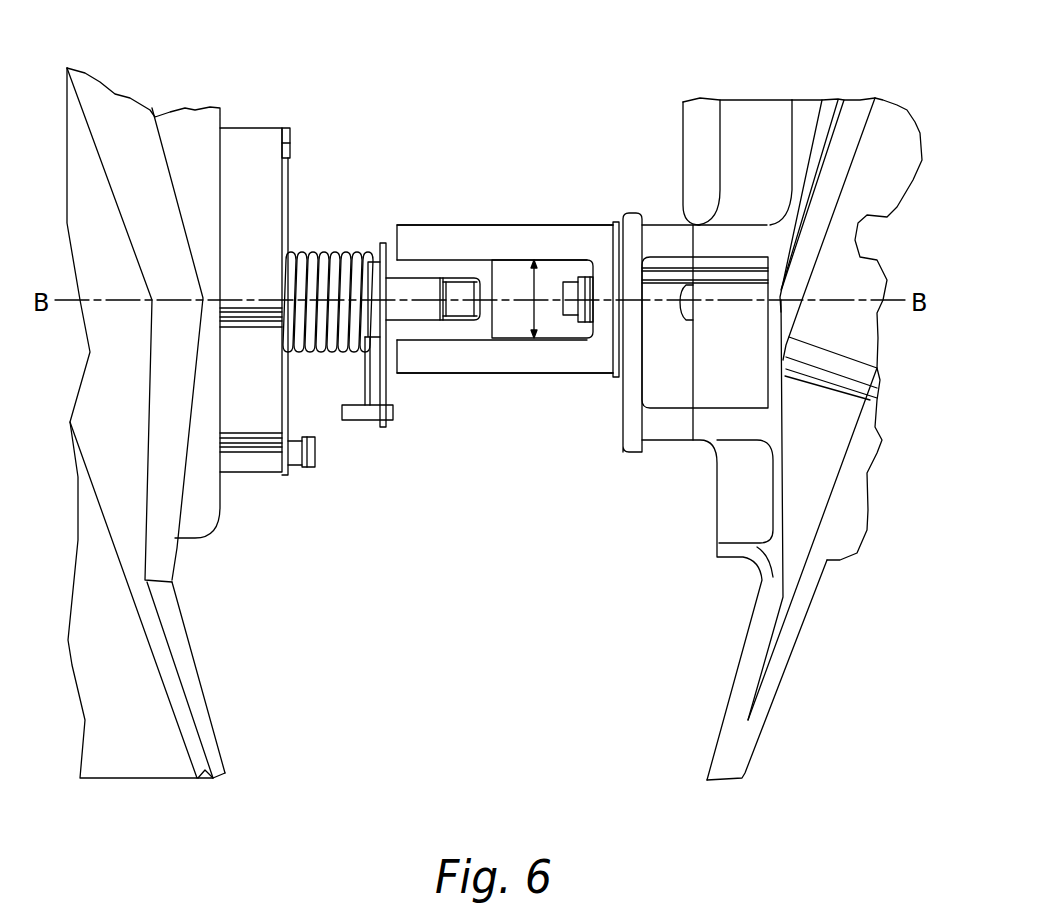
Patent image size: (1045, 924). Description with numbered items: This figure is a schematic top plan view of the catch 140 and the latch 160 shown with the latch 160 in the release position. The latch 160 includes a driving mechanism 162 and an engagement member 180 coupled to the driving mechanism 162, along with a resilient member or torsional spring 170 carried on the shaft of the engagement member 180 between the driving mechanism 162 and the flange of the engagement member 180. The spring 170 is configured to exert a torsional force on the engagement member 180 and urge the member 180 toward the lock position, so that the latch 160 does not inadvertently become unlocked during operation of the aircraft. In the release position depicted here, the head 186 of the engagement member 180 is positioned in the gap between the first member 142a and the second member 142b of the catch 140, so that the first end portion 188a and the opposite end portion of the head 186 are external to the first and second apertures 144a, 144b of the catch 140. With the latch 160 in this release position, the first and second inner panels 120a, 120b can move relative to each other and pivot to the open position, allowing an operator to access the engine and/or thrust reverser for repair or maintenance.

The first inner panel 120a is at (760, 117).
The second inner panel 120b is at (118, 113).
The catch 140 is at (568, 450).
The first member 142a is at (450, 357).
The second member 142b is at (407, 235).
The first aperture 144a is at (480, 375).
The second aperture 144b is at (440, 225).
The latch 160 is at (322, 155).
The driving mechanism 162 is at (260, 112).
The torsional spring 170 is at (322, 257).
The engagement member 180 is at (403, 307).
The head 186 is at (457, 277).
The first end portion 188a is at (465, 292).